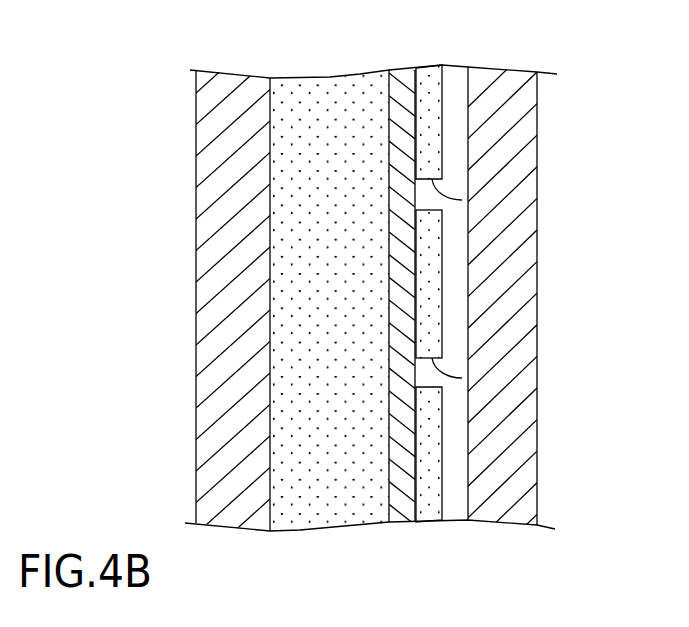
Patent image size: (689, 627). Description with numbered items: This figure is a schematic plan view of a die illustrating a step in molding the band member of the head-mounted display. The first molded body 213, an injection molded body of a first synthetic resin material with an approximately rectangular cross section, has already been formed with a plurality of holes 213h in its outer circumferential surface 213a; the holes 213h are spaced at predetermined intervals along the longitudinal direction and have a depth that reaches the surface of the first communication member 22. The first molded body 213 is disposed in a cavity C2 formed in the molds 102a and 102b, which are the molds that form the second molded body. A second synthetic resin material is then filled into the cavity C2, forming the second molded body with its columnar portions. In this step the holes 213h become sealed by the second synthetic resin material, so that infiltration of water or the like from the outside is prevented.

The first communication member 22 is at (399, 70).
The mold 102a is at (537, 98).
The mold 102b is at (196, 118).
The first molded body 213 is at (332, 526).
The outer circumferential surface 213a is at (441, 264).
The holes 213h is at (462, 200).
The cavity C2 is at (453, 512).